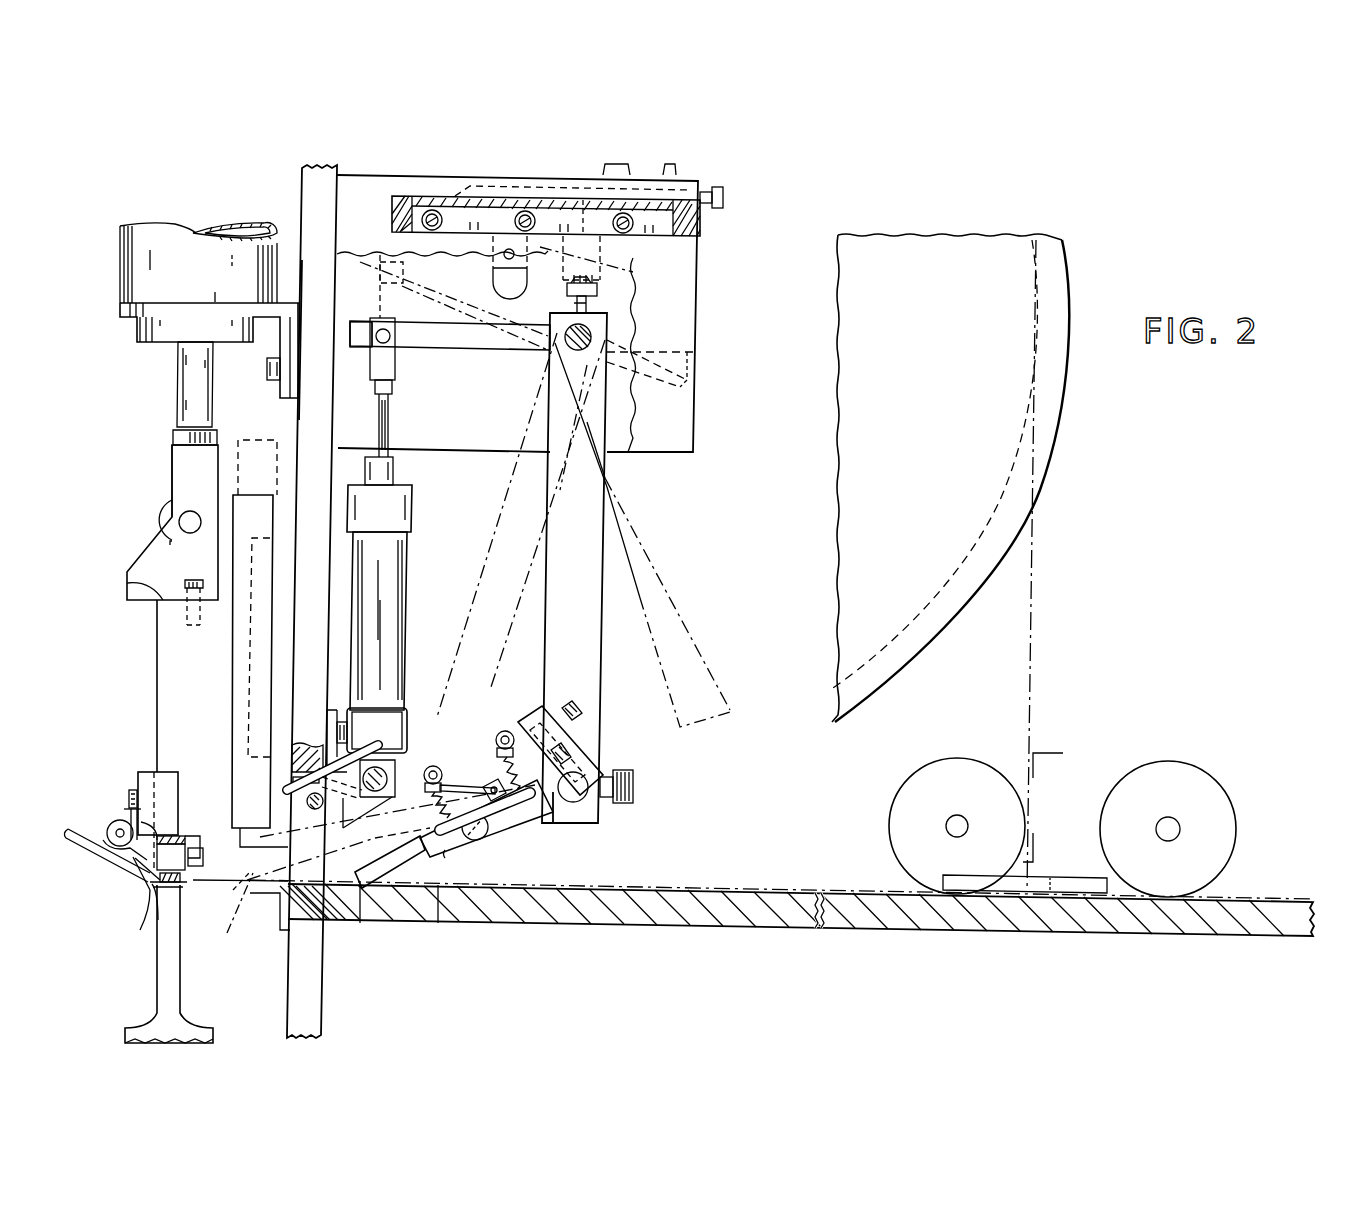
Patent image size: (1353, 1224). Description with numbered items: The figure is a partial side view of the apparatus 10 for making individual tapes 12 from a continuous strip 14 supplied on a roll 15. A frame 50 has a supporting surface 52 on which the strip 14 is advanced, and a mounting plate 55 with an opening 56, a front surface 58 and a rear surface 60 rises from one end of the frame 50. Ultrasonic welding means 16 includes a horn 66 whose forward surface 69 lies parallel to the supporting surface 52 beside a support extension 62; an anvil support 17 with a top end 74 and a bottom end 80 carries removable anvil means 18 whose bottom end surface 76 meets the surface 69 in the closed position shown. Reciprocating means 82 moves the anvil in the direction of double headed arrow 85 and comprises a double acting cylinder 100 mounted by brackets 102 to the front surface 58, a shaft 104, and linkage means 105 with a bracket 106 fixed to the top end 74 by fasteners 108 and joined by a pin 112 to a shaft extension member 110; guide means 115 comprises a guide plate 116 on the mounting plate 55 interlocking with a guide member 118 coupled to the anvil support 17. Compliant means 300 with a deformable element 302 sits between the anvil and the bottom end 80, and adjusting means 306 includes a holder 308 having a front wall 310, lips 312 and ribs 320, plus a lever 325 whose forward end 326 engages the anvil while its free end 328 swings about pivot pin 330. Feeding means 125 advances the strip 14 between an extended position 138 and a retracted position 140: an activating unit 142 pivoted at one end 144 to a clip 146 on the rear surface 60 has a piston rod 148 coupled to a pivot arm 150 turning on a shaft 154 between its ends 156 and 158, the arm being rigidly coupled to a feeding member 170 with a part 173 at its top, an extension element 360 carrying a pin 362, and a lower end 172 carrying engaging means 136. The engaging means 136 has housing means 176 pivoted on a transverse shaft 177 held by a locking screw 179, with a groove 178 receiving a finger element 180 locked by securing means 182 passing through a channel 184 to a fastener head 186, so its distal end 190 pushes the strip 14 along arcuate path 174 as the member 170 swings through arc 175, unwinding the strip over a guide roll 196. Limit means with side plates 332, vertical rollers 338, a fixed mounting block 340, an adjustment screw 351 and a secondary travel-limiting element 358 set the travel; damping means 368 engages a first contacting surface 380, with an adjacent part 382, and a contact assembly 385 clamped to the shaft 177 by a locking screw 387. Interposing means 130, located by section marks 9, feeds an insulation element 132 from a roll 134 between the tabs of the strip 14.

The section line 9- 9 is at (1090, 809).
The apparatus 10 is at (138, 452).
The tapes 12 is at (283, 222).
The continuous elongated strip 14 is at (1038, 592).
The roll 15 is at (1053, 440).
The ultrasonic welding means 16 is at (138, 1023).
The anvil support 17 is at (150, 644).
The anvil means 18 is at (180, 884).
The frame 50 is at (1162, 938).
The supporting surface 52 is at (1272, 898).
The mounting plate 55 is at (330, 201).
The opening 56 is at (295, 784).
The front surface 58 is at (303, 294).
The rear surface 60 is at (335, 244).
The support extension 62 is at (256, 890).
The ultrasonic horn 66 is at (158, 988).
The surface 69 is at (155, 920).
The top end 74 is at (132, 592).
The bottom end surface 76 is at (178, 895).
The bottom end 80 is at (186, 846).
The reciprocating means 82 is at (116, 312).
The double headed arrow 85 is at (102, 656).
The double acting cylinder 100 is at (176, 232).
The brackets 102 is at (282, 350).
The shaft 104 is at (185, 396).
The linkage means 105 is at (170, 494).
The bracket 106 is at (212, 569).
The fasteners 108 is at (188, 580).
The slide block 110 is at (175, 478).
The pin 112 is at (184, 524).
The guide bar 115 is at (276, 514).
The guide plate 116 is at (275, 668).
The guide member 118 is at (253, 495).
The feeding means 125 is at (605, 622).
The interposing means 130 is at (1040, 874).
The insulation element 132 is at (1054, 890).
The roll 134 is at (1168, 762).
The engaging means 136 is at (428, 868).
The extended position 138 is at (495, 518).
The retracted position 140 is at (680, 550).
The activating unit 142 is at (403, 605).
The end 144 is at (440, 780).
The clip 146 is at (372, 808).
The piston rod 148 is at (390, 432).
The pivot arm 150 is at (470, 346).
The shaft 154 is at (566, 343).
The end 156 is at (345, 330).
The end 158 is at (700, 336).
The feeding member 170 is at (580, 665).
The lower end 172 is at (575, 826).
The adjusting nut 173 is at (604, 318).
The arrow 174 is at (490, 720).
The double headed arrows 175 is at (530, 688).
The housing means 176 is at (520, 840).
The transverse shaft 177 is at (605, 798).
The groove 178 is at (450, 852).
The locking screw 179 is at (636, 788).
The finger element 180 is at (410, 860).
The securing means 182 is at (488, 842).
The channel 184 is at (582, 805).
The fastener head 186 is at (490, 830).
The distal end 190 is at (356, 886).
The guide roll 196 is at (954, 772).
The compliant means 300 is at (180, 836).
The compliant element 302 is at (128, 822).
The adjusting means 306 is at (205, 780).
The holder 308 is at (132, 862).
The front wall 310 is at (137, 851).
The lips 312 is at (146, 910).
The ribs 320 is at (162, 772).
The lever 325 is at (140, 880).
The forward end 326 is at (190, 862).
The free end 328 is at (92, 850).
The pivot pin 330 is at (100, 828).
The side plates 332 is at (694, 444).
The vertical rollers 338 is at (412, 216).
The mounting block 340 is at (470, 188).
The adjustment screw 351 is at (715, 210).
The secondary travel-limiting element 358 is at (492, 284).
The extension element 360 is at (595, 282).
The pin 362 is at (583, 200).
The damping means 368 is at (512, 730).
The first contacting surface 380 is at (377, 730).
The mounting lug 382 is at (330, 745).
The contact assembly 385 is at (580, 704).
The locking screw 387 is at (576, 724).